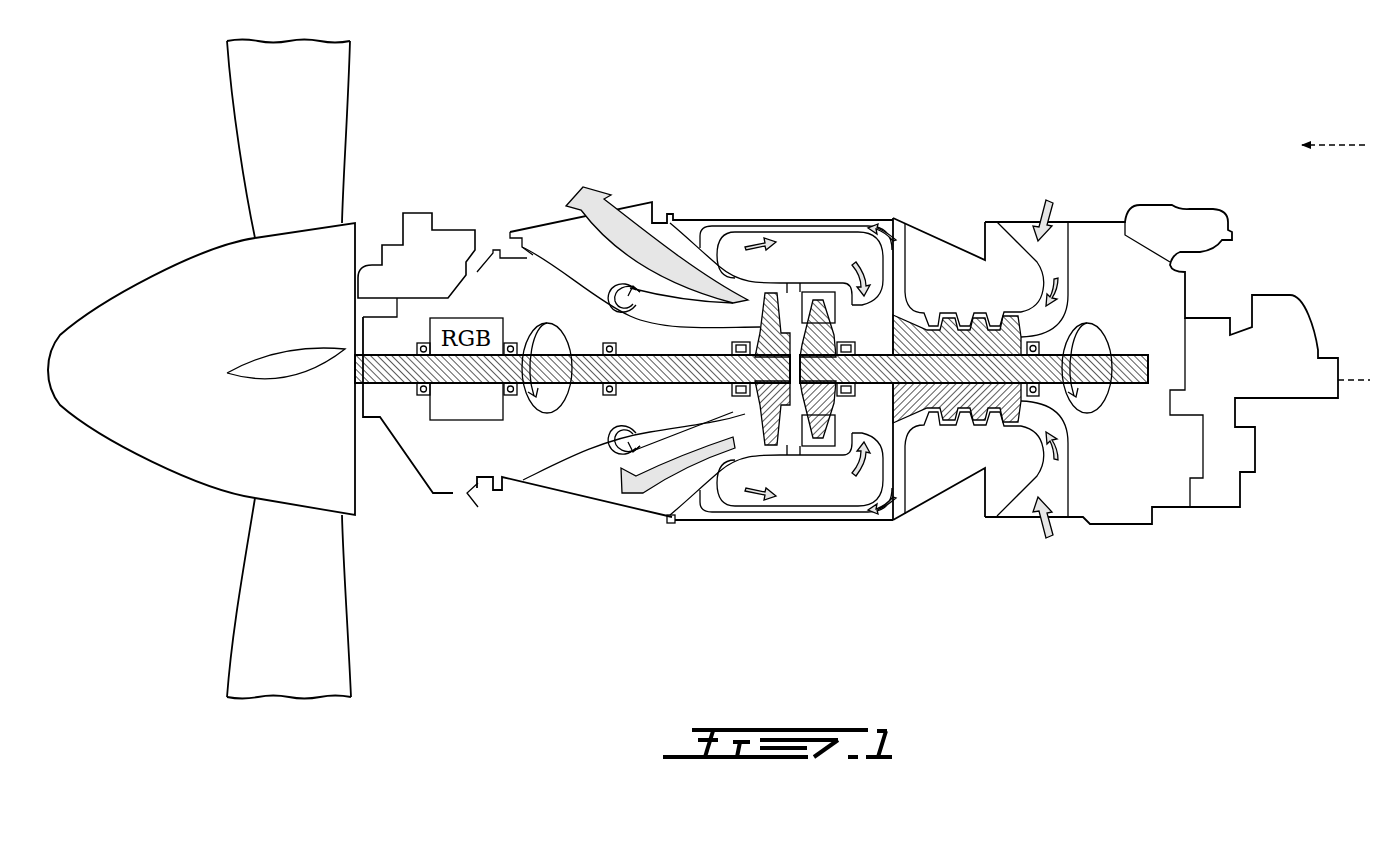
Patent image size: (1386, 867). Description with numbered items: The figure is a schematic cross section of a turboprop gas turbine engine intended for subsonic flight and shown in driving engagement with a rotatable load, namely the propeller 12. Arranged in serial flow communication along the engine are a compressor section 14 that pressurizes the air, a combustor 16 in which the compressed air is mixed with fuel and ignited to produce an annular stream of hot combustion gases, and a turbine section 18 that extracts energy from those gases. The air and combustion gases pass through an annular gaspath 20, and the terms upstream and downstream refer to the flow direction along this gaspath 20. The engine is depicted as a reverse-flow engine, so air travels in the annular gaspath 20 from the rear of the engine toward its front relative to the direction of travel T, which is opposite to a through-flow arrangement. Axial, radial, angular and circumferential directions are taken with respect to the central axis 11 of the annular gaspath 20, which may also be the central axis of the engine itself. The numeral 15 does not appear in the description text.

The central axis 11 is at (1354, 384).
The propeller 12 is at (292, 91).
The compressor section 14 is at (957, 300).
The air inlet 15 is at (1052, 191).
The combustor 16 is at (806, 490).
The turbine section 18 is at (746, 409).
The annular gaspath 20 is at (898, 487).
The direction of travel T is at (1342, 150).